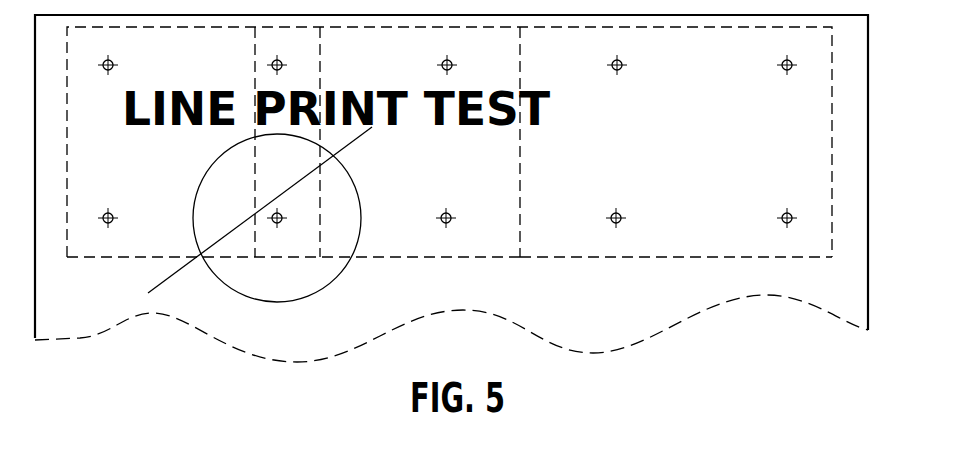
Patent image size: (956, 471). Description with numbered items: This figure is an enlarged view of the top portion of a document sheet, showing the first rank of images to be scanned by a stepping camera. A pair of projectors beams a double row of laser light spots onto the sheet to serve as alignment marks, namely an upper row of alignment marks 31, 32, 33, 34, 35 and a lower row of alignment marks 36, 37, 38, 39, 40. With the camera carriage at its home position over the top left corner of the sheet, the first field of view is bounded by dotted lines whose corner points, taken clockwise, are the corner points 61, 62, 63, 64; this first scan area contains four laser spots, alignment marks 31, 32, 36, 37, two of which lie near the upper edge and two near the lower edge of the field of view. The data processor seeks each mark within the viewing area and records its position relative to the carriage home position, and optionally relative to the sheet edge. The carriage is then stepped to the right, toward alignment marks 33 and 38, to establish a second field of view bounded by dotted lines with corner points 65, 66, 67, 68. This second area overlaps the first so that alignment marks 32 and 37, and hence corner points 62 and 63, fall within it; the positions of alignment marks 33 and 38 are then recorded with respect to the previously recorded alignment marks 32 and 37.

The alignment mark 31 is at (113, 63).
The alignment mark 32 is at (267, 65).
The alignment mark 33 is at (442, 64).
The alignment mark 34 is at (620, 70).
The alignment mark 35 is at (785, 70).
The alignment mark 36 is at (112, 214).
The alignment mark 37 is at (276, 213).
The alignment mark 38 is at (450, 214).
The alignment mark 39 is at (620, 214).
The alignment mark 40 is at (785, 212).
The corner point 61 is at (67, 27).
The corner point 62 is at (320, 28).
The corner point 63 is at (320, 257).
The corner point 64 is at (67, 257).
The corner point 65 is at (252, 27).
The corner point 66 is at (520, 28).
The corner point 67 is at (520, 257).
The corner point 68 is at (255, 257).